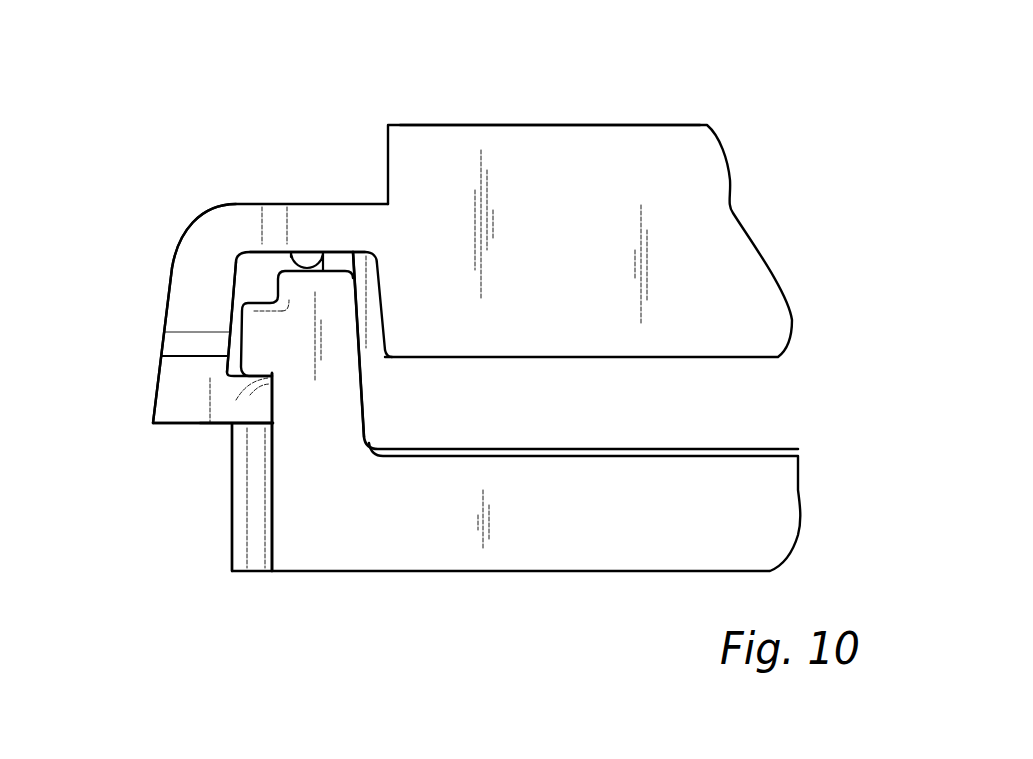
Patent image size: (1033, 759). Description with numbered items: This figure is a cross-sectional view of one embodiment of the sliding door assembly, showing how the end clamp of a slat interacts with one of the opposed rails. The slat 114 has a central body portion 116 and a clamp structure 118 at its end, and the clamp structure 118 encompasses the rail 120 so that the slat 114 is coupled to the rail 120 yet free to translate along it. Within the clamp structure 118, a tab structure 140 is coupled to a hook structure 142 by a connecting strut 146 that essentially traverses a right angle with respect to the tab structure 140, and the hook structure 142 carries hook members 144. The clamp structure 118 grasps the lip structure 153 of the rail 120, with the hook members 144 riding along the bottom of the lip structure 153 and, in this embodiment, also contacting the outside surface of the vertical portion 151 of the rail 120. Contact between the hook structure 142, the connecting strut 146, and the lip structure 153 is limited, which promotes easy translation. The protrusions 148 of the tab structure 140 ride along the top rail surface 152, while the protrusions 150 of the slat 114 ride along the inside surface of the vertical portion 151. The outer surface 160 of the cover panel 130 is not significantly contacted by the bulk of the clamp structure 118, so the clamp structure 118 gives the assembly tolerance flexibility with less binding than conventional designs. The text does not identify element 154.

The slat 114 is at (539, 124).
The central body portion 116 is at (716, 95).
The clamp structure 118 is at (162, 196).
The rail 120 is at (297, 458).
The cover panel 130 is at (597, 572).
The tab structure 140 is at (315, 203).
The hook structure 142 is at (177, 425).
The hook member 144 is at (227, 425).
The connecting strut 146 is at (208, 201).
The protrusions of the tab structure 148 is at (292, 256).
The protrusions of the slat 150 is at (265, 427).
The vertical portion 151 is at (366, 417).
The top rail surface 152 is at (339, 246).
The lip structure 153 is at (252, 380).
The seal side wall 154 is at (218, 344).
The outer surface 160 is at (262, 520).